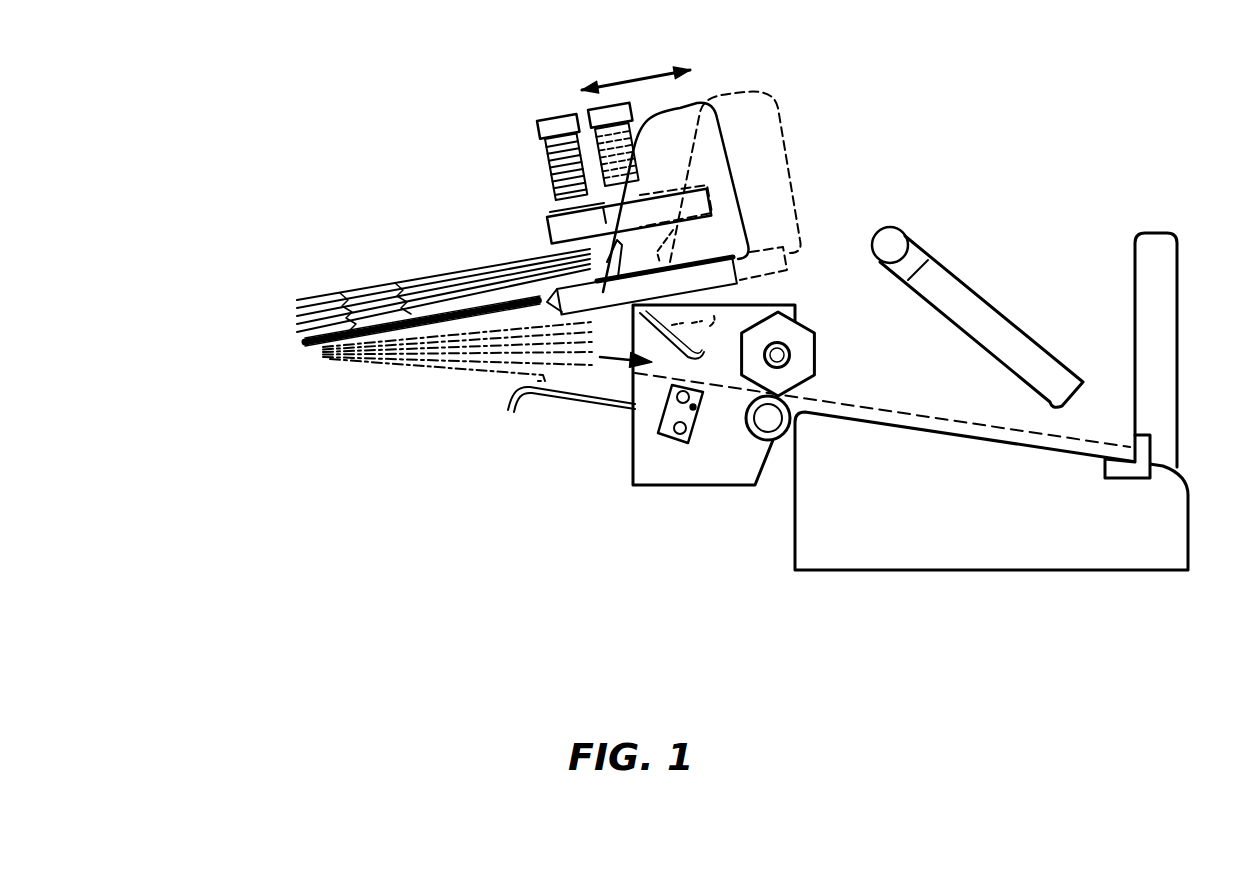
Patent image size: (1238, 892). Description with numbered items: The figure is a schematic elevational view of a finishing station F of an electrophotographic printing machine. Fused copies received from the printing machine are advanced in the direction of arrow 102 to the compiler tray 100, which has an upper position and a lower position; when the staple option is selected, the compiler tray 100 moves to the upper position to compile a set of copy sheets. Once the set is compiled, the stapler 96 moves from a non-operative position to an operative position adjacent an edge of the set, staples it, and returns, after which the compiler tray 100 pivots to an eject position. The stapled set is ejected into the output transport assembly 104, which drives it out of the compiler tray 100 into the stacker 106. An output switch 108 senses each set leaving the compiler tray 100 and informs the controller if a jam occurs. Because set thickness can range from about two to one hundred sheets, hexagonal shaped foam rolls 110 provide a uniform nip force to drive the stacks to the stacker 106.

The stapler 96 is at (805, 130).
The compiler tray 100 is at (280, 378).
The arrow 102 is at (735, 367).
The output transport assembly 104 is at (600, 430).
The stacker 106 is at (900, 590).
The output switch 108 is at (673, 432).
The hexagonal shaped foam rolls 110 is at (783, 343).
The finishing station F is at (1018, 112).